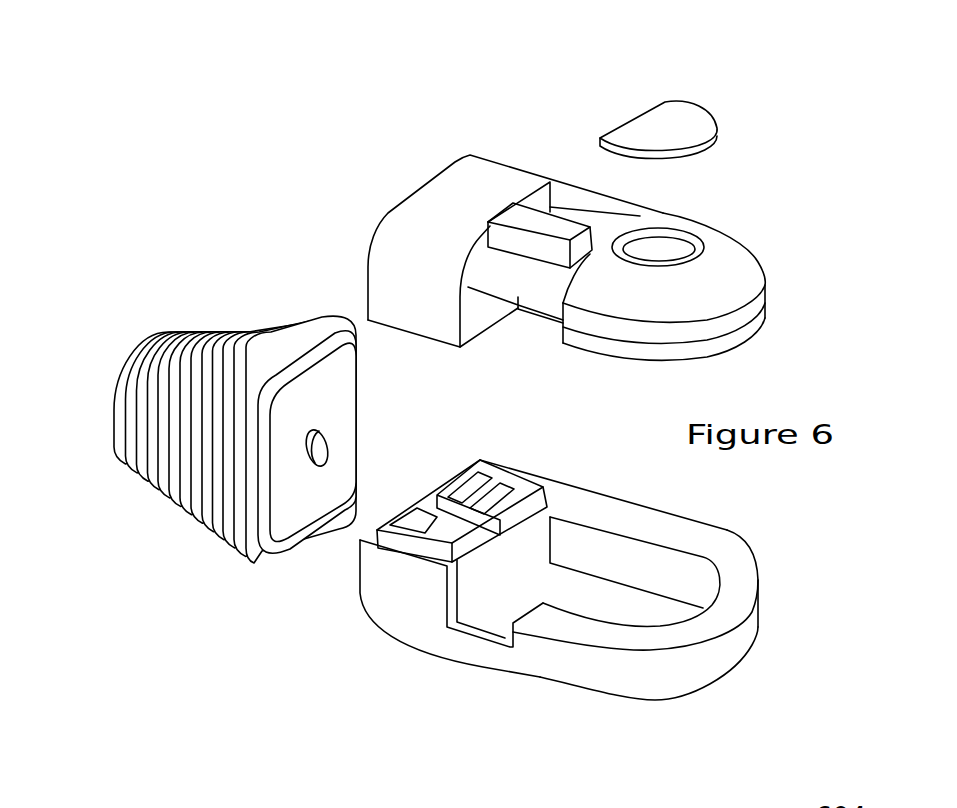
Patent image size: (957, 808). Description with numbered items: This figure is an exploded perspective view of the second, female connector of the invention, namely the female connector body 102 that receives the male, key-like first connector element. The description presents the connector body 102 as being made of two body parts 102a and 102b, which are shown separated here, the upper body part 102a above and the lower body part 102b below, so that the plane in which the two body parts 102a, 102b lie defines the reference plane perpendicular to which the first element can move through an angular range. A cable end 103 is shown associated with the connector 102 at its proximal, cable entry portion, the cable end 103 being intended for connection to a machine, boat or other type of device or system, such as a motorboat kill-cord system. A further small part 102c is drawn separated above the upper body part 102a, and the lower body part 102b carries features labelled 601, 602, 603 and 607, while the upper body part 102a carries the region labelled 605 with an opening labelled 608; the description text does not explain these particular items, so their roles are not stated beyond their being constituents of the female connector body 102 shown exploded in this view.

The female connector body 102 is at (207, 190).
The body part 102a is at (514, 177).
The body part 102b is at (358, 597).
The cover disc 102c is at (683, 125).
The cable end 103 is at (116, 460).
The rounded end of lower housing 601 is at (708, 623).
The top surface of lower housing 602 is at (562, 507).
The side wall of lower housing 603 is at (617, 640).
The rounded end of upper housing 605 is at (742, 276).
The slots 607 is at (463, 520).
The opening 608 is at (657, 250).